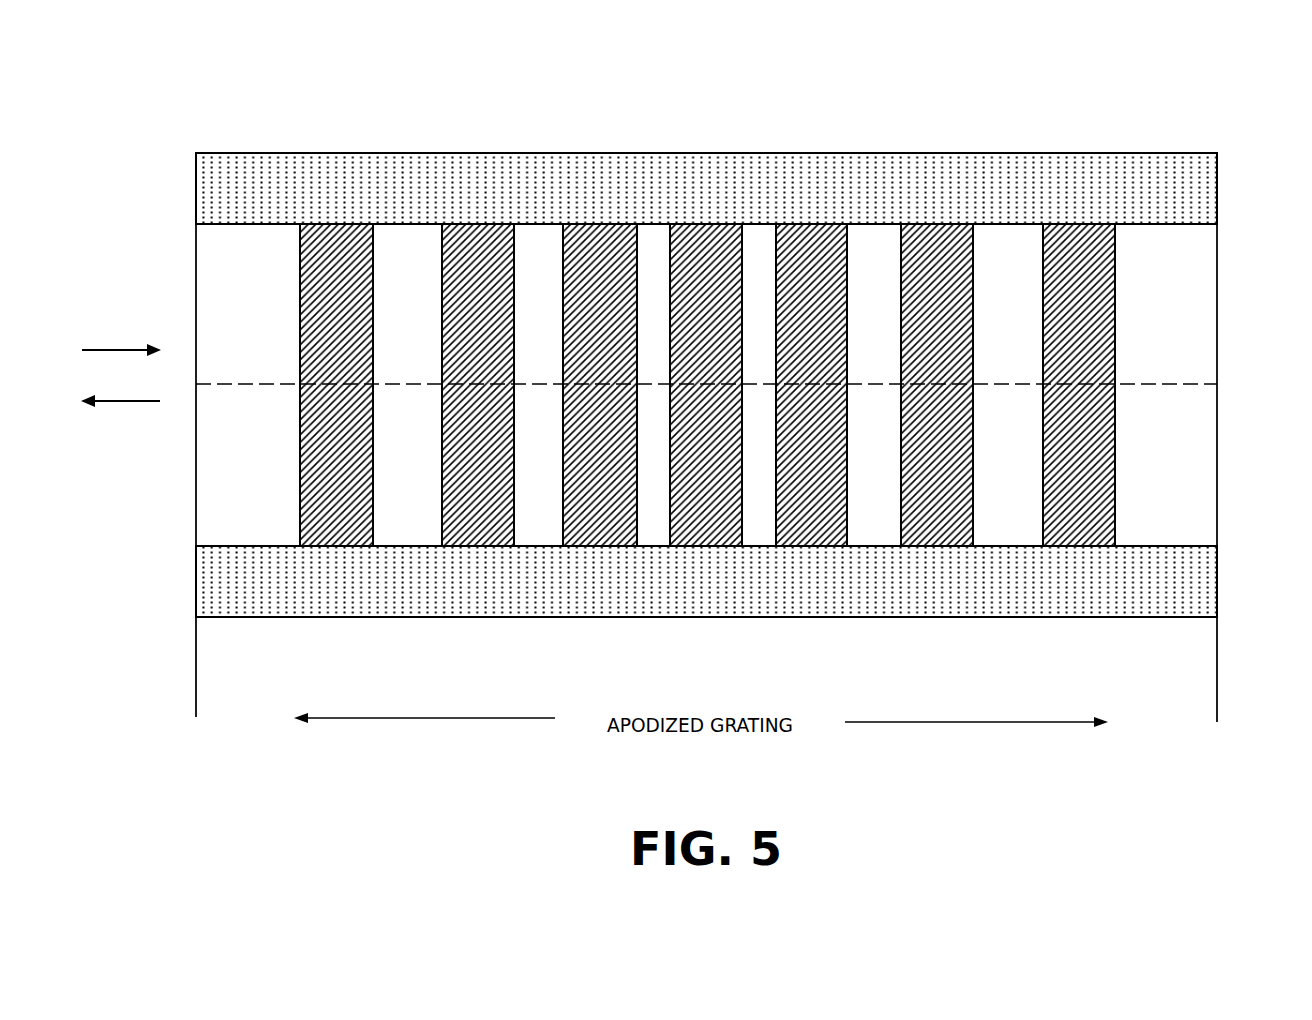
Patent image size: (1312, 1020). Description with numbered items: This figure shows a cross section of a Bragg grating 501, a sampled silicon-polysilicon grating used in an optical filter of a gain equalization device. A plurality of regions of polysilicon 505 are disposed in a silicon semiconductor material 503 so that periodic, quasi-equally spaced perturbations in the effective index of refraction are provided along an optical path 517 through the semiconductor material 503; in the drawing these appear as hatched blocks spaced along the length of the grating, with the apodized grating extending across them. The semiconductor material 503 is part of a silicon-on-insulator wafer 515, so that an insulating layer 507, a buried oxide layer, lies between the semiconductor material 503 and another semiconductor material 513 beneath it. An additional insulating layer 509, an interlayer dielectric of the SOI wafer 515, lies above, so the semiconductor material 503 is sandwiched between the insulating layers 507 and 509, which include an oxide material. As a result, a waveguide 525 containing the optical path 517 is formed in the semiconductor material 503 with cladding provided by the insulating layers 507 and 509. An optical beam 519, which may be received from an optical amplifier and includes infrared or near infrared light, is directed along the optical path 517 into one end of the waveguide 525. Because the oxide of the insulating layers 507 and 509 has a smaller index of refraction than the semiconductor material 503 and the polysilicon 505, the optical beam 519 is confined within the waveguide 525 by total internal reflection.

The Bragg grating 501 is at (1217, 66).
The semiconductor material 503 is at (400, 232).
The polysilicon 505 is at (332, 224).
The insulating layer 507 is at (1206, 565).
The insulating layer 509 is at (1210, 185).
The semiconductor material 513 is at (1207, 675).
The silicon-on-insulator wafer 515 is at (1174, 135).
The optical path 517 is at (1197, 384).
The optical beam 519 is at (113, 348).
The waveguide 525 is at (1231, 270).